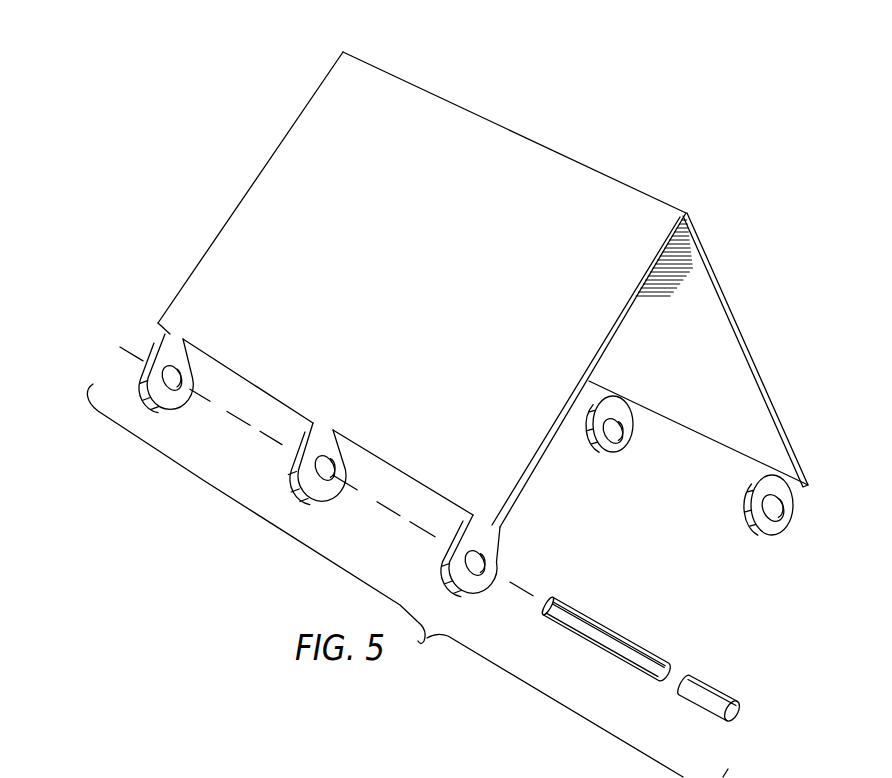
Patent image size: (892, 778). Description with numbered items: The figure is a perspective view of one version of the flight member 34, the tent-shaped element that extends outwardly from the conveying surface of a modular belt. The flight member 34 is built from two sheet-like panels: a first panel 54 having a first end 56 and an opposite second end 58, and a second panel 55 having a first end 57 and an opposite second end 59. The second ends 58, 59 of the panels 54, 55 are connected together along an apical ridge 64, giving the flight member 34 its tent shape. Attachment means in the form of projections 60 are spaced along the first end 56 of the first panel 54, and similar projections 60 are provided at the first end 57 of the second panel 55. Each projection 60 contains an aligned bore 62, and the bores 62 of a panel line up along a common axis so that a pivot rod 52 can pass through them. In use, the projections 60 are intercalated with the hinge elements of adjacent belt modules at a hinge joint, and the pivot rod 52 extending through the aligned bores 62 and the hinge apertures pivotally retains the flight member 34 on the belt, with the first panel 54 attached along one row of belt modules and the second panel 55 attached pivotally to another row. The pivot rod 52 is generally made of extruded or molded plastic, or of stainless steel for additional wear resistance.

The flight member 34 is at (460, 286).
The pivot rod 52 is at (637, 644).
The first panel 54 is at (399, 286).
The second panel 55 is at (698, 334).
The first end 56 is at (180, 306).
The first end 57 is at (706, 422).
The second end 58 is at (337, 70).
The second end 59 is at (690, 214).
The projections 60 is at (312, 493).
The aligned bores 62 is at (481, 570).
The apical ridge 64 is at (472, 110).